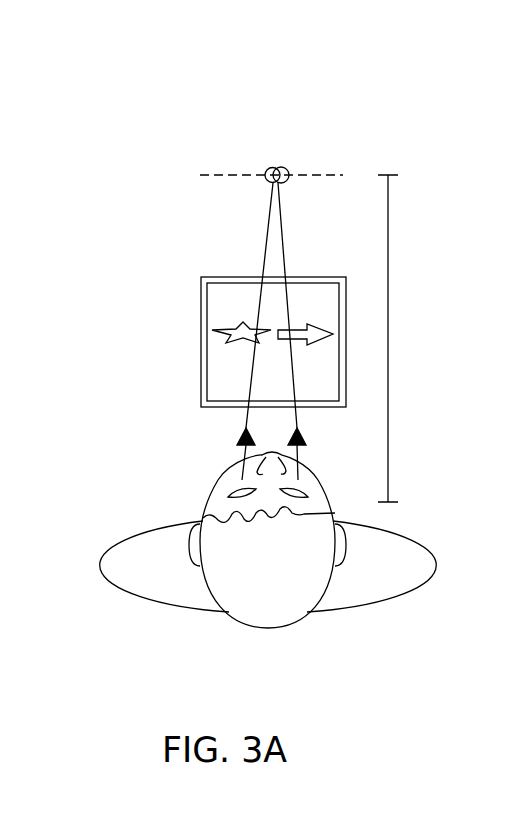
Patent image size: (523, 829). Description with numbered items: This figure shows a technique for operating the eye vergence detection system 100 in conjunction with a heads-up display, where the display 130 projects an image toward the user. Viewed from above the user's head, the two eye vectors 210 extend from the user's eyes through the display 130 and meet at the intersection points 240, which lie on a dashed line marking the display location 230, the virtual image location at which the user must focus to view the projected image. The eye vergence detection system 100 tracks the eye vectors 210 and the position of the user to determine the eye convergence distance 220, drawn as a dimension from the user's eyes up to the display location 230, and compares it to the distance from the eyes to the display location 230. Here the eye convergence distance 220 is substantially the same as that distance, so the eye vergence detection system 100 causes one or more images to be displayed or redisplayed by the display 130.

The eye vergence detection system 100 is at (189, 317).
The display 130 is at (200, 376).
The eye vectors 210 is at (265, 238).
The eye convergence distance 220 is at (388, 342).
The display location 230 is at (324, 174).
The intersection points 240 is at (267, 170).